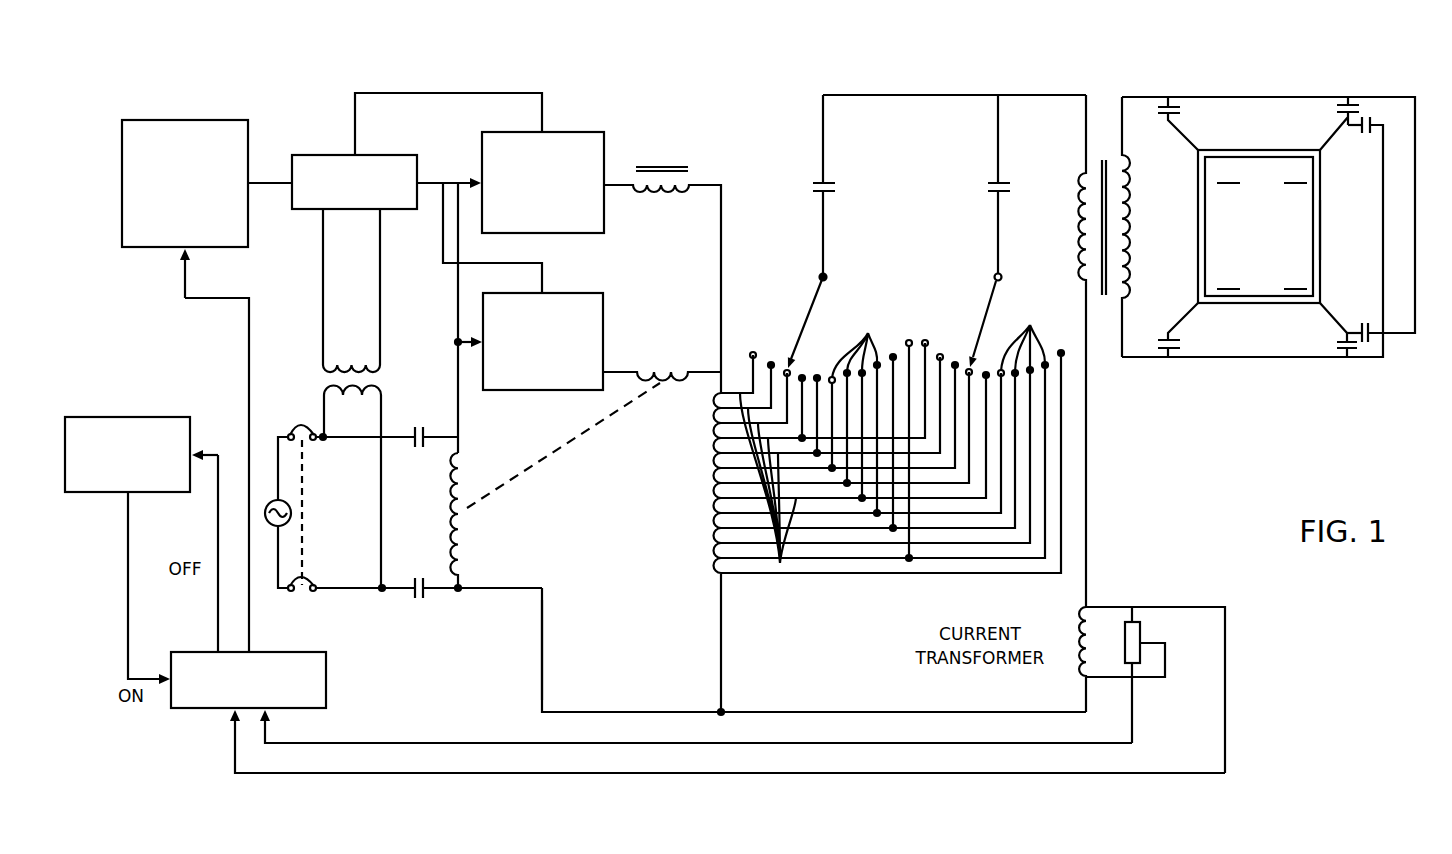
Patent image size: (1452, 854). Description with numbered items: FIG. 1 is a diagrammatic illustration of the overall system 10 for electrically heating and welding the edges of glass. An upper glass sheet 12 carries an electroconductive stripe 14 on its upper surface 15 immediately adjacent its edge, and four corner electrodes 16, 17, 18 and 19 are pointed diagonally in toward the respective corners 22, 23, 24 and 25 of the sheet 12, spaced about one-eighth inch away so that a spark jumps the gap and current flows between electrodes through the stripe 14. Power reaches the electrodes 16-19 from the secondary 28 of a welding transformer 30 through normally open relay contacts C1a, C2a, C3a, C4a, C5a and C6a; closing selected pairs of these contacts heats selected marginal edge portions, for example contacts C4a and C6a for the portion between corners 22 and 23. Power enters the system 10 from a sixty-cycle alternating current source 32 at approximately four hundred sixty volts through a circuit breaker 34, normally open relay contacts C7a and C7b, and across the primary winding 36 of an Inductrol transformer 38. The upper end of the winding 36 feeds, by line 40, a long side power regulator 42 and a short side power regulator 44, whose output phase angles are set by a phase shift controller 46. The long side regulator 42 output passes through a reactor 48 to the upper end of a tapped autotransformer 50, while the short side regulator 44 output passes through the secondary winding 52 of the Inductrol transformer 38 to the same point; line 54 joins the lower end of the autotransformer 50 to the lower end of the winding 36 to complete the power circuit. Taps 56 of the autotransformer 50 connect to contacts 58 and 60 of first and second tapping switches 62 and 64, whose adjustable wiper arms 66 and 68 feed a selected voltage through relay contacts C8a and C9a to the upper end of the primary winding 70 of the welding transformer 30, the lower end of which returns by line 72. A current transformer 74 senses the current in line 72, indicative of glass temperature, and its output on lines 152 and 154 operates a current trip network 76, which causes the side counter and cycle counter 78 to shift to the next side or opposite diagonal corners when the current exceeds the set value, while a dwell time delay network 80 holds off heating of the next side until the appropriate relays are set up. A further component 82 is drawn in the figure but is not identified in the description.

The system 10 is at (608, 48).
The upper glass sheet 12 is at (1335, 216).
The electroconductive stripe 14 is at (1320, 263).
The upper surface 15 is at (1240, 248).
The corner electrode 16 is at (1199, 318).
The corner electrode 17 is at (1197, 136).
The corner electrode 18 is at (1323, 135).
The corner electrode 19 is at (1326, 318).
The corner 22 is at (1228, 279).
The corner 23 is at (1228, 173).
The corner 24 is at (1295, 173).
The corner 25 is at (1295, 279).
The secondary 28 is at (1138, 230).
The welding transformer 30 is at (1108, 300).
The source 32 is at (291, 516).
The circuit breaker 34 is at (305, 485).
The primary winding 36 is at (468, 535).
The Inductrol transformer 38 is at (626, 391).
The line 40 is at (457, 379).
The long side power regulator 42 is at (606, 118).
The short side power regulator 44 is at (596, 278).
The phase shift controller 46 is at (318, 154).
The reactor 48 is at (695, 177).
The tapped autotransformer 50 is at (718, 488).
The secondary winding 52 is at (675, 362).
The line 54 is at (545, 650).
The taps 56 is at (780, 563).
The contacts 58 is at (868, 333).
The contacts 60 is at (1030, 325).
The first tapping switch 62 is at (809, 260).
The second tapping switch 64 is at (984, 260).
The wiper arm 66 is at (792, 343).
The wiper arm 68 is at (975, 340).
The primary winding 70 is at (1078, 172).
The line 72 is at (1090, 503).
The current transformer 74 is at (1098, 622).
The current tripping network 76 is at (327, 681).
The side counter and cycle counter 78 is at (167, 98).
The dwell time delay network 80 is at (125, 390).
The transformer 82 is at (315, 384).
The line 152 is at (402, 742).
The line 154 is at (493, 773).
The normally open relay contact C1a is at (1372, 118).
The normally open relay contact C2a is at (1337, 352).
The normally open relay contact C3a is at (1383, 340).
The normally open relay contact C4a is at (1182, 352).
The normally open relay contact C5a is at (1337, 104).
The normally open relay contact C6a is at (1180, 108).
The normally open relay contact C7a is at (418, 450).
The normally open relay contact C7b is at (422, 576).
The normally open relay contact C8a is at (840, 185).
The normally open relay contact C9a is at (985, 188).